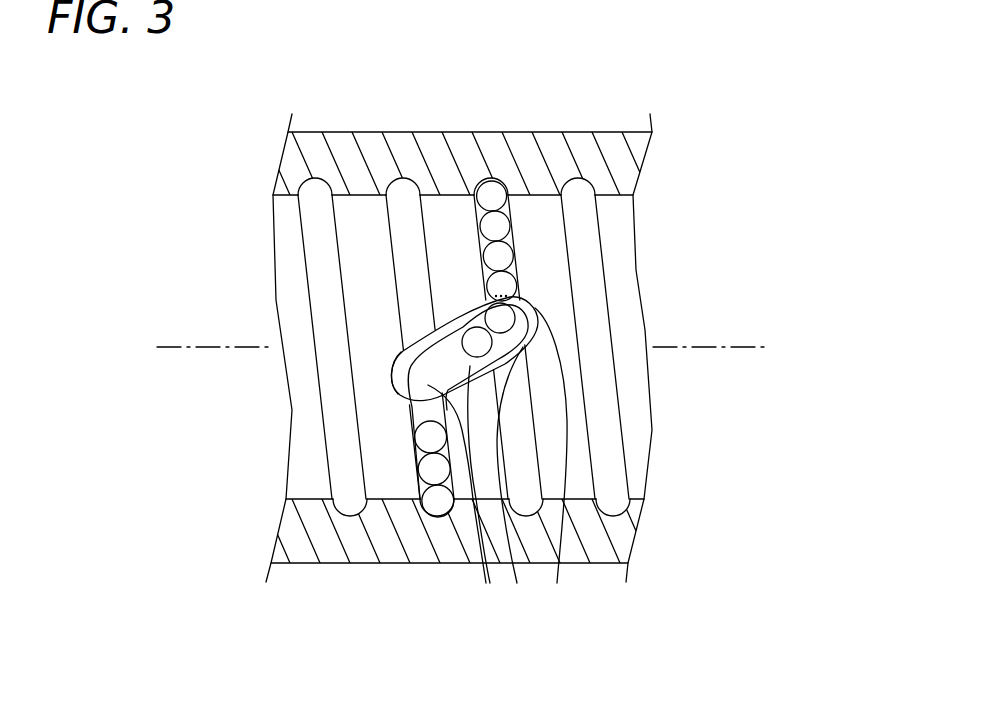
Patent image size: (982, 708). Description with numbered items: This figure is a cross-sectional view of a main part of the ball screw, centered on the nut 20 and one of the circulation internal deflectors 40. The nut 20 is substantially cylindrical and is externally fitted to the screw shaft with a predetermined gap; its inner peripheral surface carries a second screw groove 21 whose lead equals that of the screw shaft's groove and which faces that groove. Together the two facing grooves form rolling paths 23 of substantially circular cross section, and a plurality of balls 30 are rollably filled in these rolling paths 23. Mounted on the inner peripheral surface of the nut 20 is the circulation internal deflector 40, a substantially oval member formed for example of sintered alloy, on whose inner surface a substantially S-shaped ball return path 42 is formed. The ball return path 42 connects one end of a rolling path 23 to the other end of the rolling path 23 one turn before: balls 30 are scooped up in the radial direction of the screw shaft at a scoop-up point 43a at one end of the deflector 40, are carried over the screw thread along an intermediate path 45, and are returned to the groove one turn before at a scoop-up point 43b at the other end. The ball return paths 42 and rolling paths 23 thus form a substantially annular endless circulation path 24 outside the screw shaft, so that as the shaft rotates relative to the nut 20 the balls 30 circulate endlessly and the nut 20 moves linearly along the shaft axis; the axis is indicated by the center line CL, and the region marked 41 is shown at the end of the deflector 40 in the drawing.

The nut 20 is at (357, 132).
The second screw groove 21 is at (602, 392).
The rolling path 23 is at (506, 200).
The endless circulation path 24 is at (423, 650).
The ball 30 is at (437, 502).
The circulation internal deflector 40 is at (536, 297).
The bent portion of crossover 41 is at (401, 350).
The ball return path 42 is at (458, 608).
The scoop-up point 43a is at (561, 459).
The scoop-up point 43b is at (465, 488).
The intermediate path 45 is at (517, 478).
The center line CL is at (752, 347).